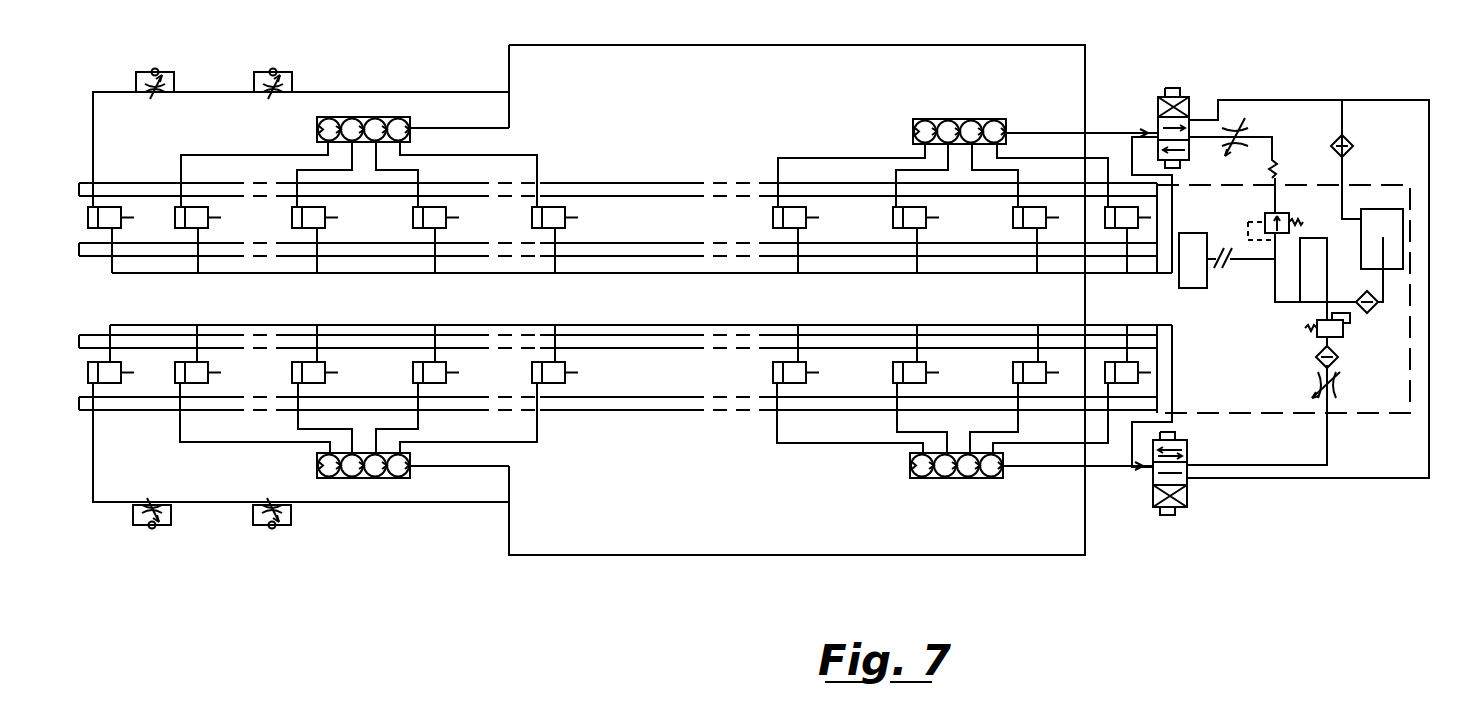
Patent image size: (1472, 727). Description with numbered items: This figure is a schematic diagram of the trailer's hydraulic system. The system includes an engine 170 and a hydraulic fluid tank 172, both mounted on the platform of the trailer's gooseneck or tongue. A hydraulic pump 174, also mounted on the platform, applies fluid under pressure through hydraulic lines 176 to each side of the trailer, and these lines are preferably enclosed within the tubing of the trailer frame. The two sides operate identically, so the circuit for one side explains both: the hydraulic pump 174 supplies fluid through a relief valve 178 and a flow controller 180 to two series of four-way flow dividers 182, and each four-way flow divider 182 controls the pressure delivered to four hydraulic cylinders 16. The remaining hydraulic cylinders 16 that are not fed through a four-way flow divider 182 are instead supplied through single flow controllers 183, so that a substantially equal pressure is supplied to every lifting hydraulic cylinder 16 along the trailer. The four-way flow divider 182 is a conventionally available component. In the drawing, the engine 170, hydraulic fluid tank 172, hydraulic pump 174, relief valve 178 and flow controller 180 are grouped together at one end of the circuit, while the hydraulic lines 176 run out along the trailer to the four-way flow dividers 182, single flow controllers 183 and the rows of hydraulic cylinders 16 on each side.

The hydraulic cylinder 16 is at (205, 362).
The engine 170 is at (1185, 289).
The hydraulic fluid tank 172 is at (1393, 250).
The hydraulic pump 174 is at (1305, 209).
The hydraulic lines 176 is at (1268, 135).
The relief valve 178 is at (1248, 122).
The flow controller 180 is at (1190, 498).
The four-way flow divider 182 is at (963, 119).
The single flow controller 183 is at (238, 40).